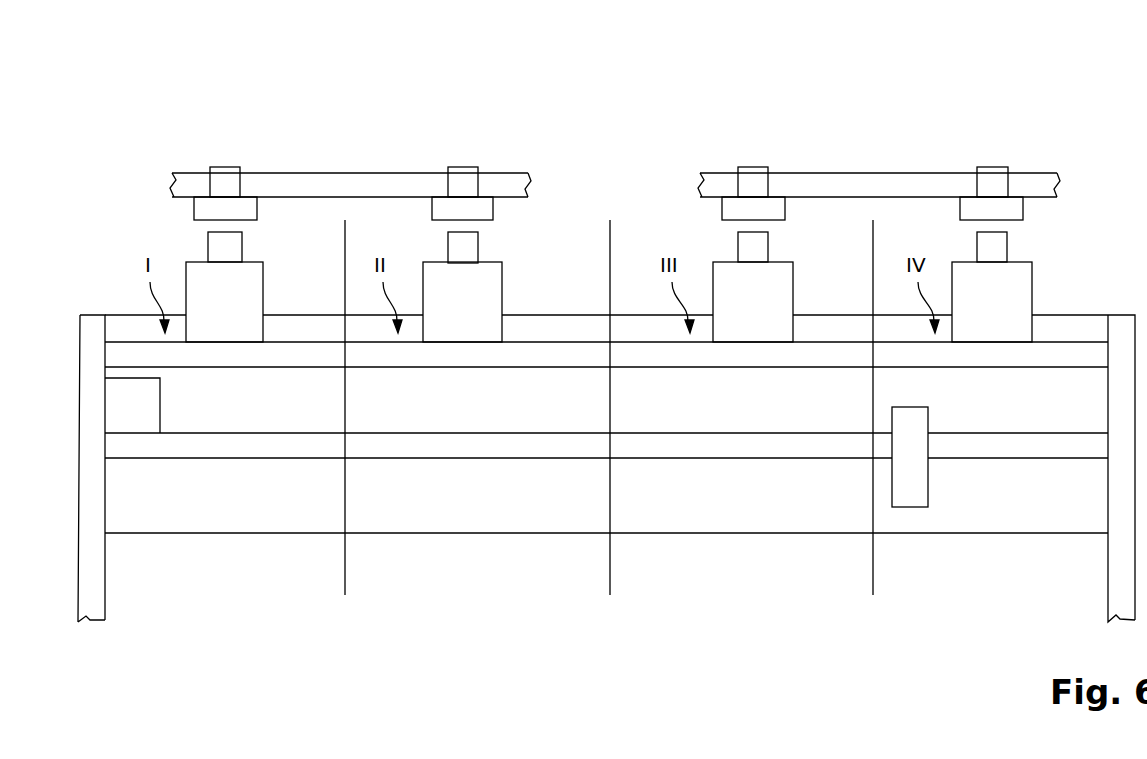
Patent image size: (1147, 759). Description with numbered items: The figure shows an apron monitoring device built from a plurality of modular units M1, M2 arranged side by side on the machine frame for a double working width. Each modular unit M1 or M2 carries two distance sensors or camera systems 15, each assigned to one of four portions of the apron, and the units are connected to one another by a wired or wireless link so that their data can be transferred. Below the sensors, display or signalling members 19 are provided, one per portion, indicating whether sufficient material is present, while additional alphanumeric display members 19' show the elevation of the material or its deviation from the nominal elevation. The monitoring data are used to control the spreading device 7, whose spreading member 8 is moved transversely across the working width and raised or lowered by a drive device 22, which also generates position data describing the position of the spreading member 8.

The spreading device 7 is at (98, 285).
The spreading member 8 is at (928, 490).
The distance sensor or camera system 15 is at (228, 165).
The display or signalling member 19 is at (645, 302).
The alphanumeric display member 19' is at (646, 247).
The drive device 22 is at (160, 412).
The modular unit M1 is at (353, 90).
The modular unit M2 is at (883, 90).